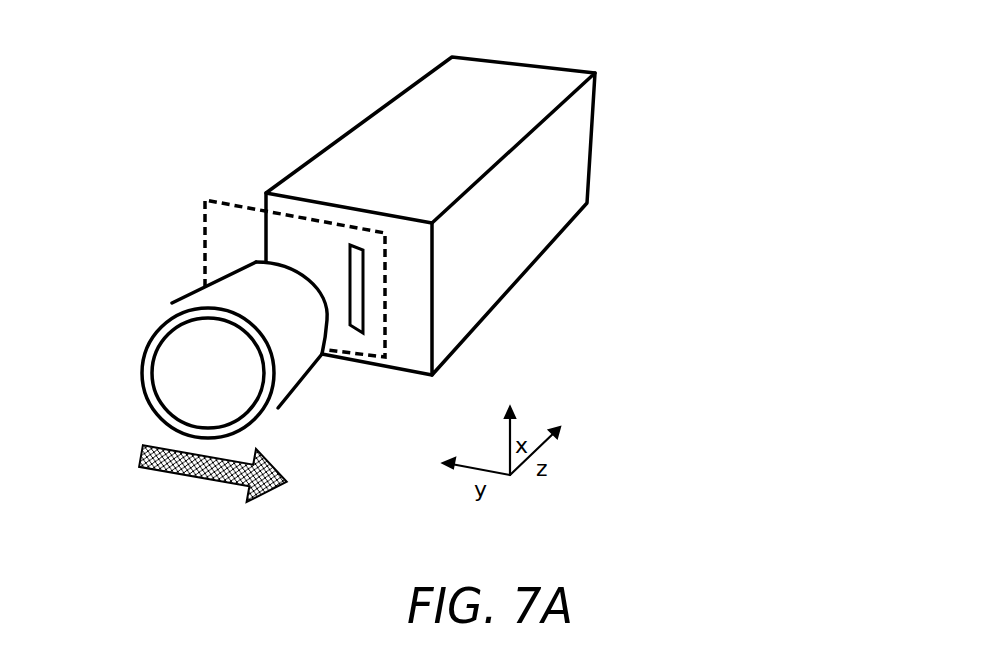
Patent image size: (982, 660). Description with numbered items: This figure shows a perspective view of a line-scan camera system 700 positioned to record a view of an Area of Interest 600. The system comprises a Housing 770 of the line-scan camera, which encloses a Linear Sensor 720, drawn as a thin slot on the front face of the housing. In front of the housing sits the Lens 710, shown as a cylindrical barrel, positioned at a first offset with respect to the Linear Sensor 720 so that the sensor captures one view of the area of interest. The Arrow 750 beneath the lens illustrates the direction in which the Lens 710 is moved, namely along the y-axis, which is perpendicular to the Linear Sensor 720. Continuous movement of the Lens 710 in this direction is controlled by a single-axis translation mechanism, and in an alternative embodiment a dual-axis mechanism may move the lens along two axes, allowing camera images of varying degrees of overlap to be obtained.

The line-scan camera system 700 is at (429, 255).
The Area of Interest 600 is at (203, 232).
The Lens 710 is at (142, 365).
The Linear Sensor 720 is at (355, 325).
The Arrow 750 is at (142, 460).
The Housing 770 is at (572, 158).